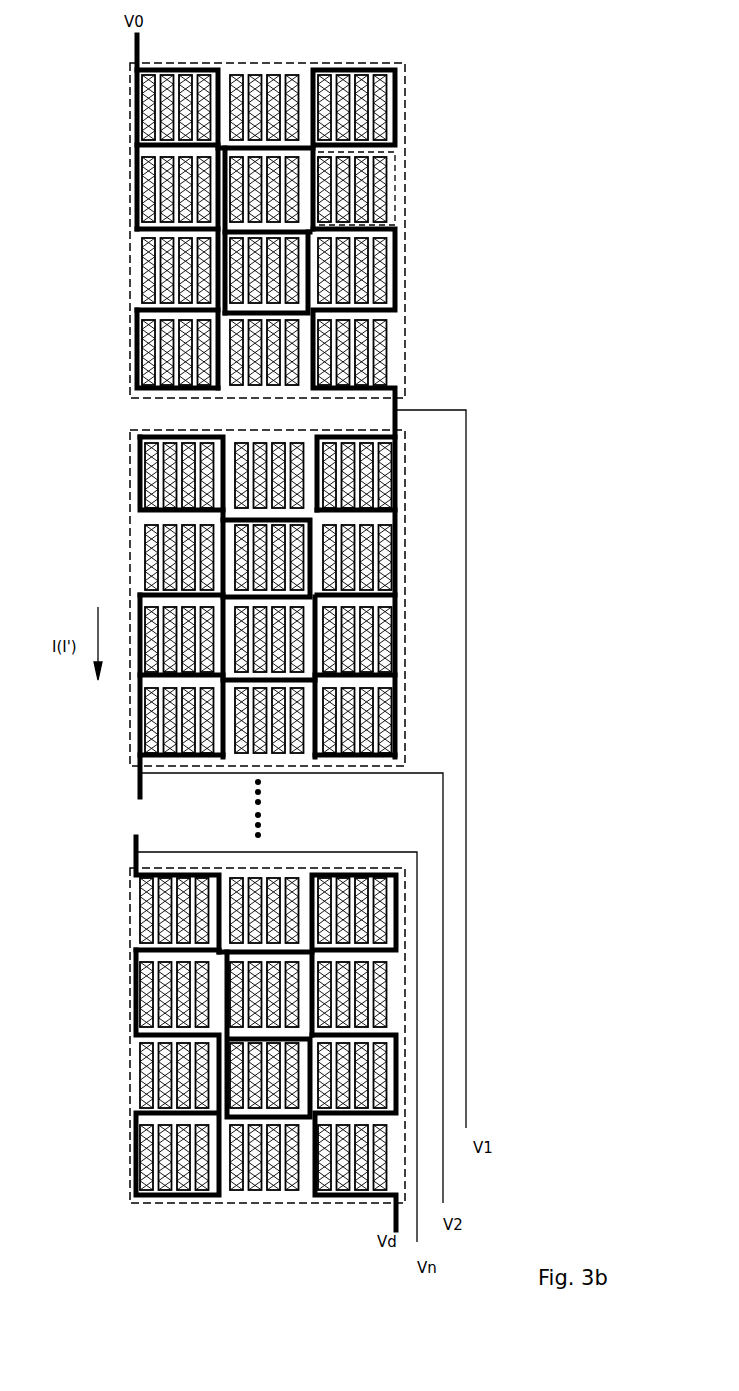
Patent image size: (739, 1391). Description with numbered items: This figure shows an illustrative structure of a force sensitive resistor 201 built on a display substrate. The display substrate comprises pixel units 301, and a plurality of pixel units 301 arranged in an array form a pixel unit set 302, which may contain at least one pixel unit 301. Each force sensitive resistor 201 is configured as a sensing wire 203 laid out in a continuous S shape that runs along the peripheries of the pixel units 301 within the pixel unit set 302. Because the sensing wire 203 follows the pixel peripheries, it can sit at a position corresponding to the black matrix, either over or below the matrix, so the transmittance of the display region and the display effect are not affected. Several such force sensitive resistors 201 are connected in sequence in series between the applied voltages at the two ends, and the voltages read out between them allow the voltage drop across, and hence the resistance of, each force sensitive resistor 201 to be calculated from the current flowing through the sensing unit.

The force sensitive resistor 201 is at (130, 168).
The sensing wire 203 is at (400, 80).
The pixel unit 301 is at (392, 112).
The pixel unit set 302 is at (395, 177).